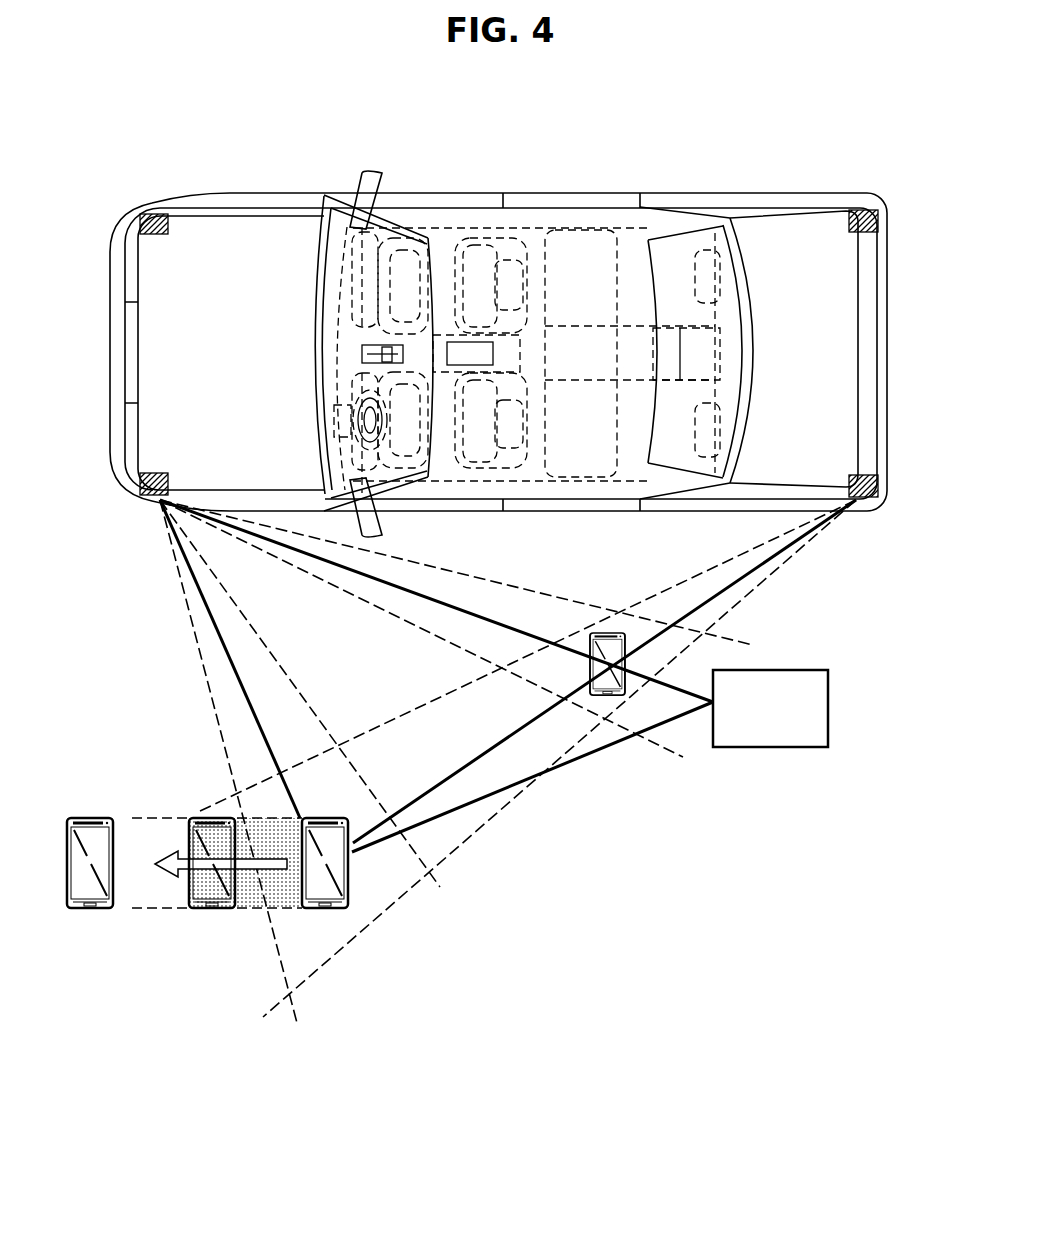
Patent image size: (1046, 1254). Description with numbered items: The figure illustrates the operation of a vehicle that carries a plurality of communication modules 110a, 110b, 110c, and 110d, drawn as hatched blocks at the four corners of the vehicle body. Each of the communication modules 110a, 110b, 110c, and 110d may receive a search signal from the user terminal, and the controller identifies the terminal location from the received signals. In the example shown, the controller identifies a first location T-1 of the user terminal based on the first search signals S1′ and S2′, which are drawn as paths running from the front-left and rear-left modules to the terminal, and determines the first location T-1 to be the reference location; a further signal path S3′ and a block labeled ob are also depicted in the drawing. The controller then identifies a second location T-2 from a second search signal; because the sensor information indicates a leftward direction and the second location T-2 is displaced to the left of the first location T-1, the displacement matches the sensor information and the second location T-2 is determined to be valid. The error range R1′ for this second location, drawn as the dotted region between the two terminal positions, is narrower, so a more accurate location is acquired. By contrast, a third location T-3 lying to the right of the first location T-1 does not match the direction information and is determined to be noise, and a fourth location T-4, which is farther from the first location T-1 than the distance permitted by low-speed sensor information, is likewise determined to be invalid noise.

The communication module 110a is at (143, 492).
The communication module 110b is at (878, 491).
The communication module 110c is at (860, 210).
The communication module 110d is at (152, 213).
The first search signal S1′ is at (210, 616).
The first search signal S2′ is at (782, 551).
The third signal path S3′ is at (441, 600).
The first location T-1 is at (320, 817).
The second location T-2 is at (207, 817).
The third location T-3 is at (607, 631).
The fourth location T-4 is at (88, 817).
The error range R1′ is at (250, 897).
The obstacle ob is at (770, 708).